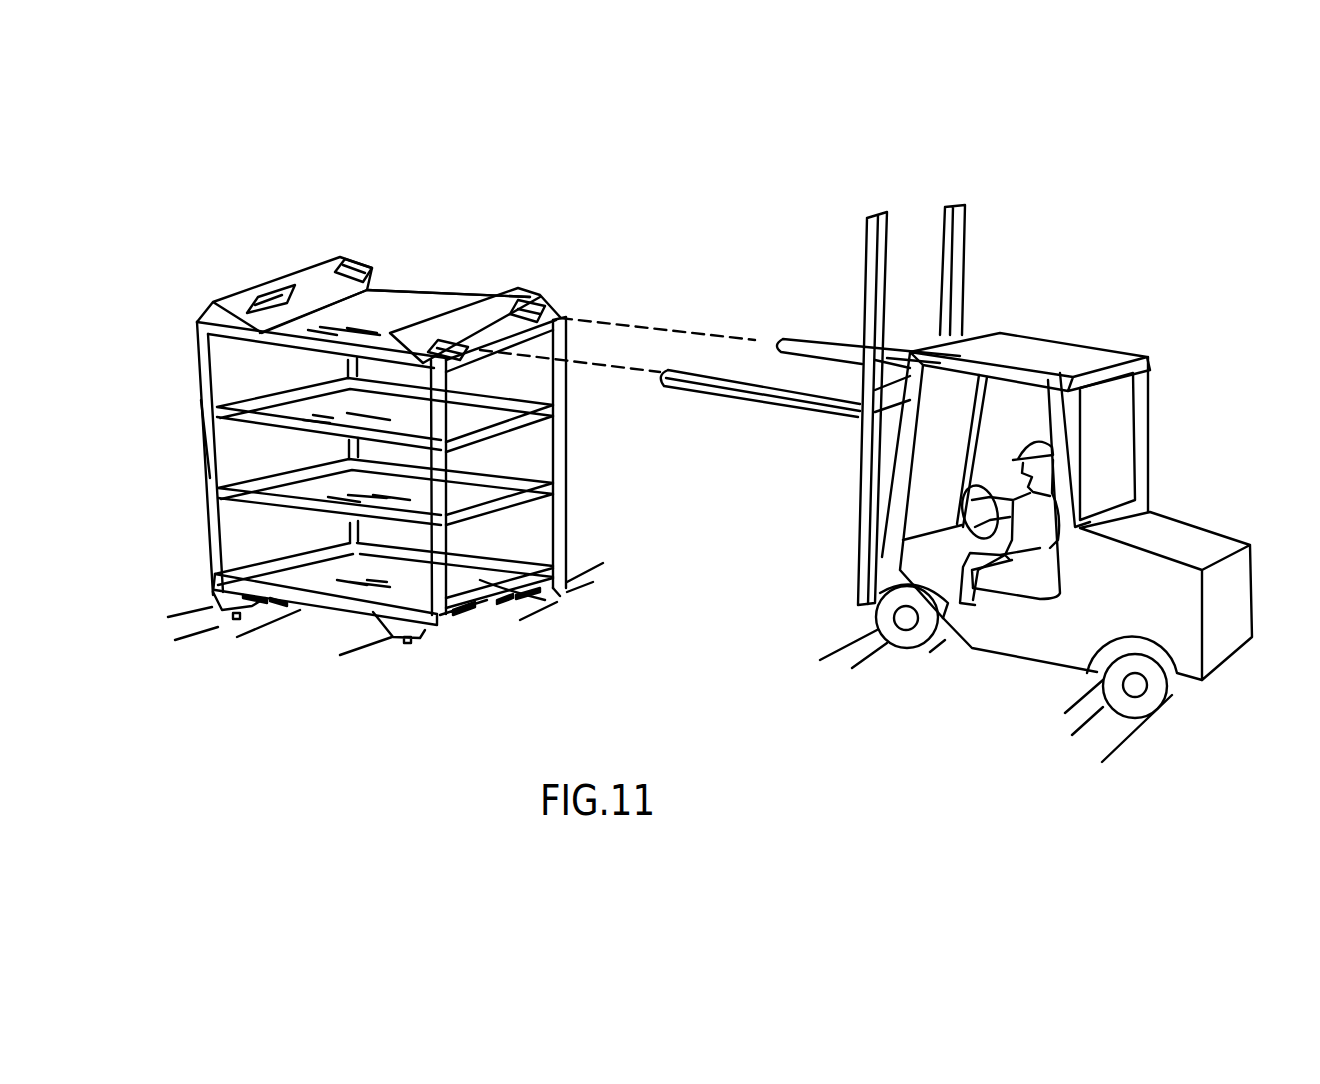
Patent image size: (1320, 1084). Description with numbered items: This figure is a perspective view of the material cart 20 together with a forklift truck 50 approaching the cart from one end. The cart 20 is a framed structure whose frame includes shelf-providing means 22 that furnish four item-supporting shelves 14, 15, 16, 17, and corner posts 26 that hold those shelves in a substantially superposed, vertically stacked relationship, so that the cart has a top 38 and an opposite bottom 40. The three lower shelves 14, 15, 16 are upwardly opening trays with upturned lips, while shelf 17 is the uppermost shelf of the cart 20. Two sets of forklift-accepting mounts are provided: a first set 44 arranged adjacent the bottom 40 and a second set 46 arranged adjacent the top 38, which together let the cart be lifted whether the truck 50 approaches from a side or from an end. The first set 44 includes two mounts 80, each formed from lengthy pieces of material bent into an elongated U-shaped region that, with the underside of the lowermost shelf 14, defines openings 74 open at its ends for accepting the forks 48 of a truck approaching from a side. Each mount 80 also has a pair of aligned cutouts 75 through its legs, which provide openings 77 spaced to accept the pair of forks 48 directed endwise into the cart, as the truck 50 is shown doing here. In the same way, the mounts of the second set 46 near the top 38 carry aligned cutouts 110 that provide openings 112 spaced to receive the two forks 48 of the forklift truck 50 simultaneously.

The material cart 20 is at (490, 247).
The shelf-providing means 22 is at (185, 389).
The corner posts 26 is at (203, 480).
The top 38 is at (392, 298).
The uppermost shelf 17 is at (413, 300).
The aligned cutouts 110 is at (287, 313).
The openings 112 is at (370, 270).
The shelf 16 is at (548, 425).
The shelf 15 is at (548, 520).
The lowermost shelf 14 is at (497, 572).
The bottom 40 is at (337, 606).
The openings 74 is at (380, 635).
The aligned cutouts 75 is at (490, 620).
The openings 77 is at (473, 617).
The mounts 80 is at (210, 593).
The first set of forklift-accepting mounts 44 is at (647, 543).
The second set of forklift-accepting mounts 46 is at (592, 300).
The forks 48 is at (787, 343).
The forklift truck 50 is at (1023, 350).